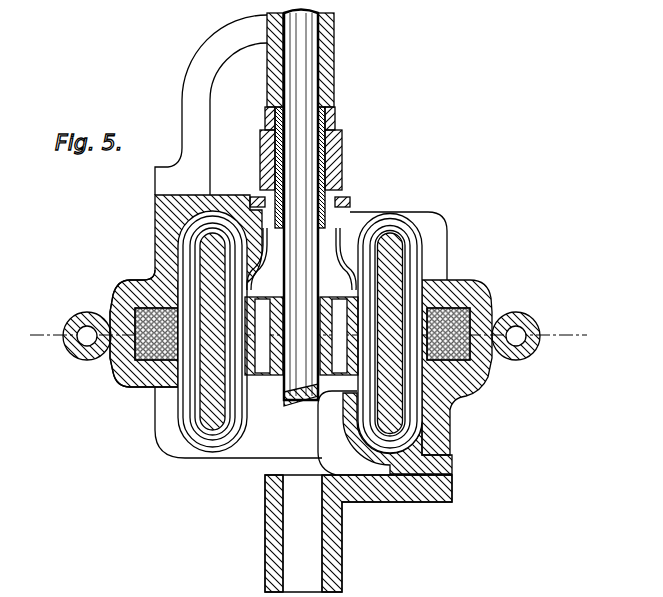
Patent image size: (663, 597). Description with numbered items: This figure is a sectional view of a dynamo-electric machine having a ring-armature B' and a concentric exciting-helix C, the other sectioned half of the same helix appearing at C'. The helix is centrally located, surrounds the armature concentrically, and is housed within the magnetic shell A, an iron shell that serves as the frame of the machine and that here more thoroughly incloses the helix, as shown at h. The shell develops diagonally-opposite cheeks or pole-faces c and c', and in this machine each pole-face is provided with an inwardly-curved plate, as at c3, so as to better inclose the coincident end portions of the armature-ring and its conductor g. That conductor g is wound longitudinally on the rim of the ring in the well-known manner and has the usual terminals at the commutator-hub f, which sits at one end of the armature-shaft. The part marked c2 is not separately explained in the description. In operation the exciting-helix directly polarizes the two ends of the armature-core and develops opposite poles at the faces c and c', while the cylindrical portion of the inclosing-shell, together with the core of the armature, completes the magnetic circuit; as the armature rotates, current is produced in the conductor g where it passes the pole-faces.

The magnetic shell A is at (301, 441).
The ring-armature B' is at (289, 333).
The exciting-helix C is at (460, 359).
The left pole piece C' is at (144, 324).
The pole-face c is at (308, 343).
The pole-face c' is at (188, 201).
The diaphragm members c2 is at (301, 259).
The inwardly-curved plate c3 is at (348, 414).
The commutator-hub f is at (346, 157).
The electric conductor g is at (416, 232).
The helix-inclosing portion of shell h is at (158, 361).